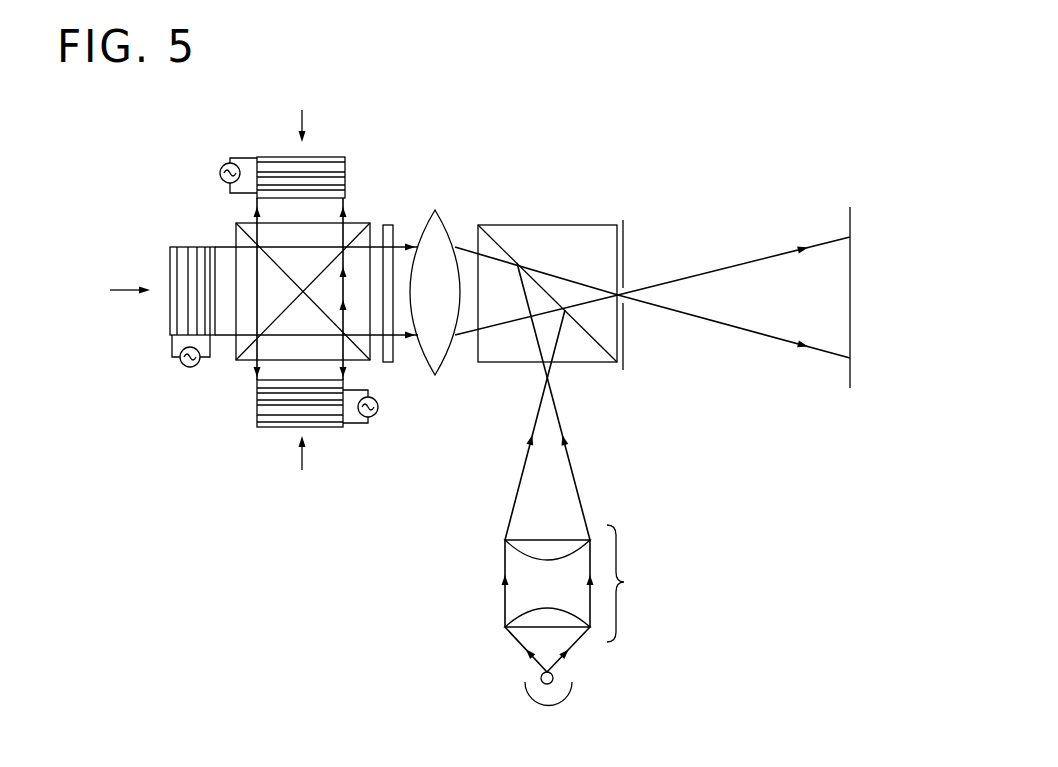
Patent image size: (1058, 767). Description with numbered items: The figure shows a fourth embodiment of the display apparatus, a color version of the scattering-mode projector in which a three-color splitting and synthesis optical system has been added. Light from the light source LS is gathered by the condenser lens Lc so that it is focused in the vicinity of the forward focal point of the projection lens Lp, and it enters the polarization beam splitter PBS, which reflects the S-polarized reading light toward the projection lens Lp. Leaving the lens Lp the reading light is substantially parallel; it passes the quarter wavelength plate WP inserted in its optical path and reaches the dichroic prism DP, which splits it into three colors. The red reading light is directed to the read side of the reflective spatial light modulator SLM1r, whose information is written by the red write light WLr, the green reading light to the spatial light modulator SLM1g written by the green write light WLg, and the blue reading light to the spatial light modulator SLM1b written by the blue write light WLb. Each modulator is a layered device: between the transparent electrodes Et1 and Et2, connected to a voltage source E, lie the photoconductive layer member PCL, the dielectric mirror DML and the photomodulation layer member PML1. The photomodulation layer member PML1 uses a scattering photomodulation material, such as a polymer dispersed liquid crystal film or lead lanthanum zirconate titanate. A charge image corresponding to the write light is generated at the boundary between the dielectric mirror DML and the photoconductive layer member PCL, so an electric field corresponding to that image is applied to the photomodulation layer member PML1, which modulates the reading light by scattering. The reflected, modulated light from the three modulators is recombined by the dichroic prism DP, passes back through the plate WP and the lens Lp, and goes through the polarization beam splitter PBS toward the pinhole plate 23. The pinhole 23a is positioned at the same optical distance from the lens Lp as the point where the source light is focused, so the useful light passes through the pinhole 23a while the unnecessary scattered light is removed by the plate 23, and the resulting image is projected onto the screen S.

The dichroic prism DP is at (378, 372).
The reflective type spatial light modulator for red SLM1r is at (260, 150).
The reflective type spatial light modulator for green SLM1g is at (155, 229).
The reflective type spatial light modulator for blue SLM1b is at (245, 442).
The transparent electrode Et1 is at (335, 158).
The transparent electrode Et2 is at (345, 192).
The photoconductive layer member PCL is at (345, 163).
The dielectric mirror DML is at (345, 174).
The photomodulation layer member PML1 is at (345, 183).
The voltage source E is at (224, 163).
The red write light WLr is at (288, 111).
The green write light WLg is at (97, 294).
The blue write light WLb is at (292, 469).
The quarter wavelength plate WP is at (395, 368).
The projection lens Lp is at (445, 230).
The polarization beam splitter PBS is at (573, 237).
The pinhole plate 23 is at (626, 243).
The pinhole 23a is at (626, 290).
The screen S is at (852, 215).
The condenser lens Lc is at (577, 583).
The light source LS is at (572, 688).